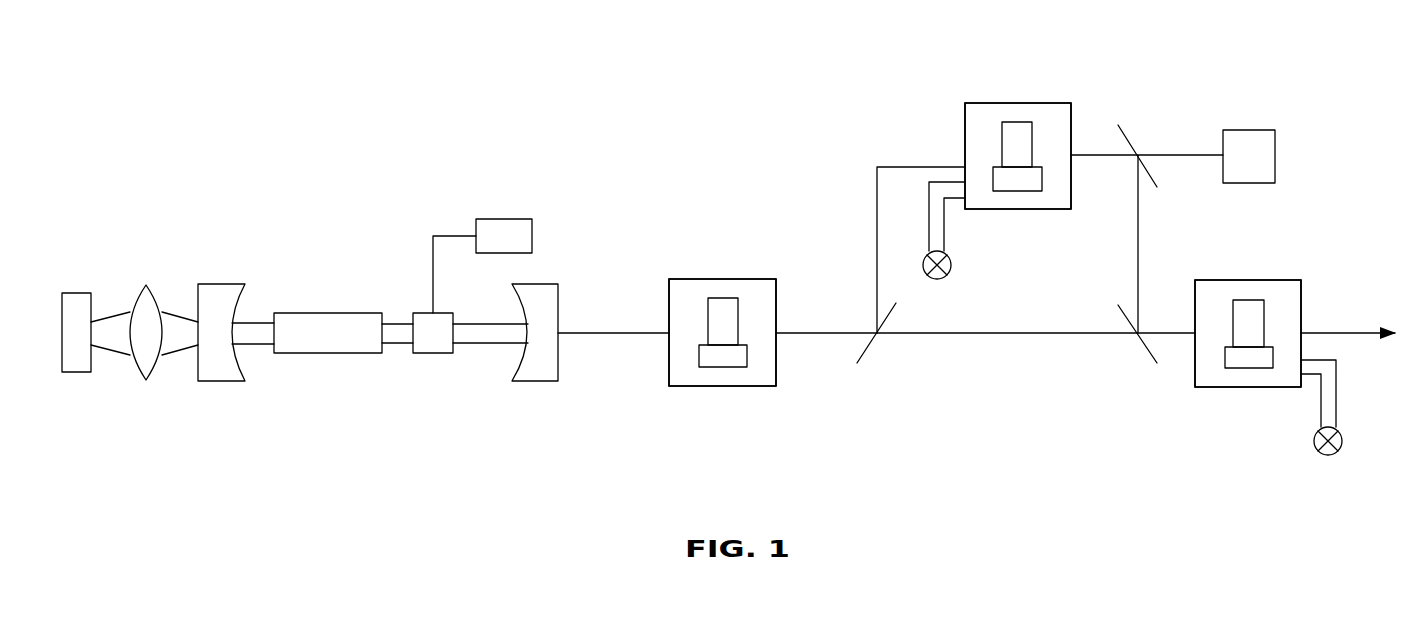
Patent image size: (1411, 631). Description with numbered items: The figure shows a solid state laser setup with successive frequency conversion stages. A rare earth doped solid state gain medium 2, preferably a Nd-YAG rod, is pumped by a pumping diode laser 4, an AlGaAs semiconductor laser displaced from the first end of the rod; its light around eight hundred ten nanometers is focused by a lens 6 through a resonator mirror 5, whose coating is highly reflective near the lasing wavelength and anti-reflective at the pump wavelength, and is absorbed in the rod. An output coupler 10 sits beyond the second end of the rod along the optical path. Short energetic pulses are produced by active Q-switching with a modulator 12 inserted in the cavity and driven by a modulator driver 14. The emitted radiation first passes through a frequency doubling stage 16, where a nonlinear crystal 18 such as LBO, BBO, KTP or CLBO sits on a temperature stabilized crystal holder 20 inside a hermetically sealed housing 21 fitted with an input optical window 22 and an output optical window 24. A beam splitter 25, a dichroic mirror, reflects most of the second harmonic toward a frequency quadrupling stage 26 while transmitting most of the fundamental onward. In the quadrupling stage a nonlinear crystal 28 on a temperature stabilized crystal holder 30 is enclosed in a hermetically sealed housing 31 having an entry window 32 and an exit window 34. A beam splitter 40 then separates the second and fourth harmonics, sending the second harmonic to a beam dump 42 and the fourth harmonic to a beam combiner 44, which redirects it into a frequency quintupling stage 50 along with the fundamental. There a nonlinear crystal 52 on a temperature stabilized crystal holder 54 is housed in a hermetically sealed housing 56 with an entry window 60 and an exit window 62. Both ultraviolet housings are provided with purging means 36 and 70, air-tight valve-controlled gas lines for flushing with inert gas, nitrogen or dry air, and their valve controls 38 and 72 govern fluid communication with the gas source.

The solid state gain medium 2 is at (300, 313).
The pumping diode laser 4 is at (80, 293).
The resonator mirror 5 is at (222, 284).
The lens 6 is at (150, 285).
The output coupler 10 is at (532, 381).
The modulator 12 is at (430, 353).
The modulator driver 14 is at (497, 219).
The frequency doubling stage 16 is at (640, 386).
The nonlinear crystal 18 is at (730, 298).
The temperature stabilized crystal holder 20 is at (733, 367).
The hermetically sealed housing 21 is at (705, 279).
The optical window 22 is at (669, 300).
The optical window 24 is at (776, 300).
The beam splitter 25 is at (862, 365).
The frequency quadrupling stage 26 is at (1090, 75).
The nonlinear crystal 28 is at (1032, 158).
The temperature stabilized crystal holder 30 is at (1020, 191).
The hermetically sealed housing 31 is at (988, 103).
The entry window 32 is at (965, 125).
The exit window 34 is at (1071, 122).
The purging means 36 is at (929, 215).
The valve control 38 is at (946, 277).
The beam splitter 40 is at (1131, 141).
The beam dump 42 is at (1275, 155).
The beam combiner 44 is at (1140, 354).
The frequency quintupling stage 50 is at (1322, 255).
The nonlinear crystal 52 is at (1262, 335).
The temperature stabilized crystal holder 54 is at (1250, 368).
The hermetically sealed housing 56 is at (1220, 280).
The entry window 60 is at (1195, 302).
The exit window 62 is at (1301, 300).
The purging means 70 is at (1336, 393).
The valve control 72 is at (1339, 452).